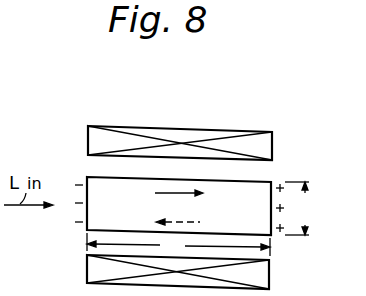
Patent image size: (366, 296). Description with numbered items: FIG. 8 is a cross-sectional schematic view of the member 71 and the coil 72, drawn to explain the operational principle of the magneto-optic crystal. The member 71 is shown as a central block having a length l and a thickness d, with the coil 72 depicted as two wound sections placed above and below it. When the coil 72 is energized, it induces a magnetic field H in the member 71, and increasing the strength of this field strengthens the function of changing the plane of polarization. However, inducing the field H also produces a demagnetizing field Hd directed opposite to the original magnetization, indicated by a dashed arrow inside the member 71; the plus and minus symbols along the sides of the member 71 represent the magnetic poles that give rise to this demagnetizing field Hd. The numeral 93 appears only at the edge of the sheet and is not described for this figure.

The member 71 is at (269, 178).
The coil 72 is at (262, 132).
The partially visible numeral (adjacent figure) 93 is at (9, 279).